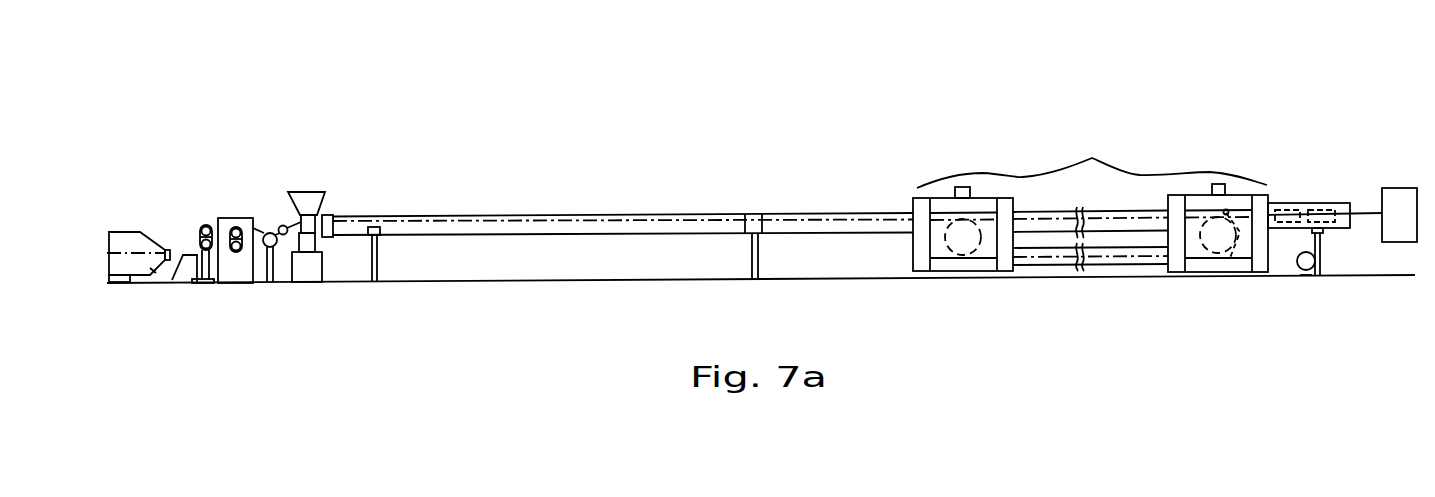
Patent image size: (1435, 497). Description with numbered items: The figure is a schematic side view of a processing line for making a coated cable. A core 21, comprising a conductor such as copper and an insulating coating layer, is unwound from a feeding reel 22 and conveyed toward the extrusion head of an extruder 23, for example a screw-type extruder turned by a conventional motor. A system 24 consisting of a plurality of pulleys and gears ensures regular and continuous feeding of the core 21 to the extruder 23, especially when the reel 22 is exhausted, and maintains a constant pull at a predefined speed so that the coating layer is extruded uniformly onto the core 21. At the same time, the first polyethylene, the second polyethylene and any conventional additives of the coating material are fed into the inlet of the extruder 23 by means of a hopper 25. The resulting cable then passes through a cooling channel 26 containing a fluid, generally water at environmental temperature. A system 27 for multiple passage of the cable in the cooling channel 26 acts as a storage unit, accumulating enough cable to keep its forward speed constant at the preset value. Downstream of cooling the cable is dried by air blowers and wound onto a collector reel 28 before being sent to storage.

The core 21 is at (180, 260).
The feeding reel 22 is at (117, 245).
The extruder 23 is at (320, 217).
The system of pulleys and gears 24 is at (233, 205).
The hopper 25 is at (308, 203).
The cooling channel 26 is at (587, 227).
The system for multiple passage of the cable 27 is at (1095, 150).
The collector reel 28 is at (1393, 207).